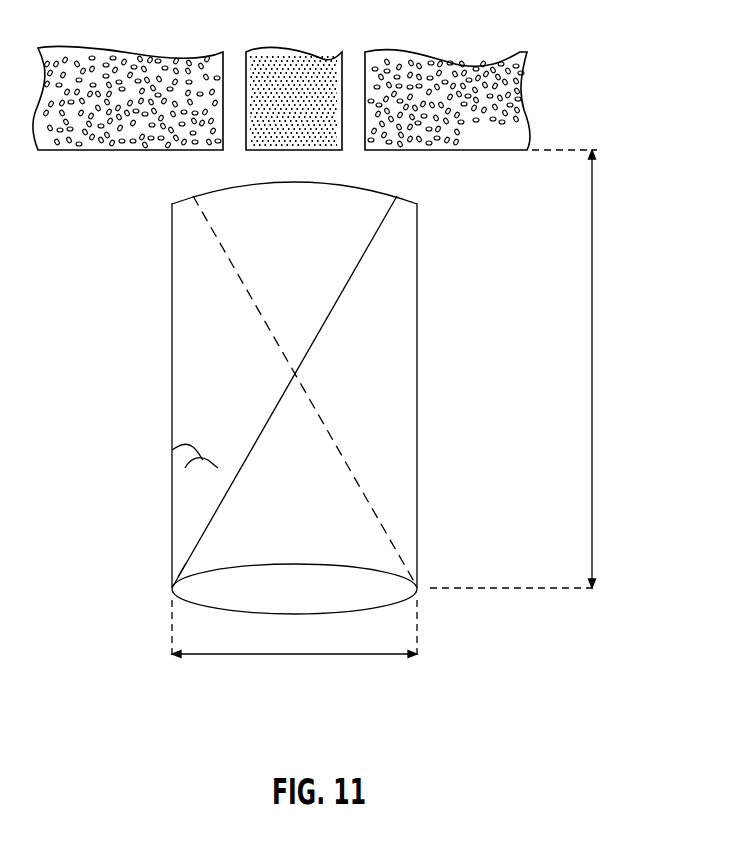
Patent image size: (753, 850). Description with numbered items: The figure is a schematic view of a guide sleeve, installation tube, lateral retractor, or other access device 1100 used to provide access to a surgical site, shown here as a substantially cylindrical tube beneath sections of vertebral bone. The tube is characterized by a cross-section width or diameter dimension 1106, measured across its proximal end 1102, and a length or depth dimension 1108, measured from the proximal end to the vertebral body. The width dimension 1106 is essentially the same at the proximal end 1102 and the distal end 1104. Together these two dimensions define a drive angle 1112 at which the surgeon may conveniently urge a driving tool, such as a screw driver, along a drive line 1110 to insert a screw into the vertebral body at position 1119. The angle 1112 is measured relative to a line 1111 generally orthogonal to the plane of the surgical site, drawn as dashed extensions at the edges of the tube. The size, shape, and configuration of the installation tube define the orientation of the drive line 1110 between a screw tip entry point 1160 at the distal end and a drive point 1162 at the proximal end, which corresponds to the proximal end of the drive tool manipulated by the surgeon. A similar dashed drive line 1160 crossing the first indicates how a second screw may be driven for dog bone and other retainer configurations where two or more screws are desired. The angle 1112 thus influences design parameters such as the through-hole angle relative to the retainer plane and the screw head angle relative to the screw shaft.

The guide sleeve or access device 1100 is at (172, 335).
The proximal end 1102 is at (295, 590).
The distal end 1104 is at (317, 220).
The width dimension 1106 is at (294, 655).
The depth dimension 1108 is at (593, 371).
The drive line 1110 is at (348, 283).
The orthogonal reference line 1111 is at (172, 626).
The drive angle 1112 is at (172, 450).
The screw insertion position 1119 is at (437, 117).
The screw tip entry point / second drive line 1160 is at (423, 149).
The drive point 1162 is at (183, 561).